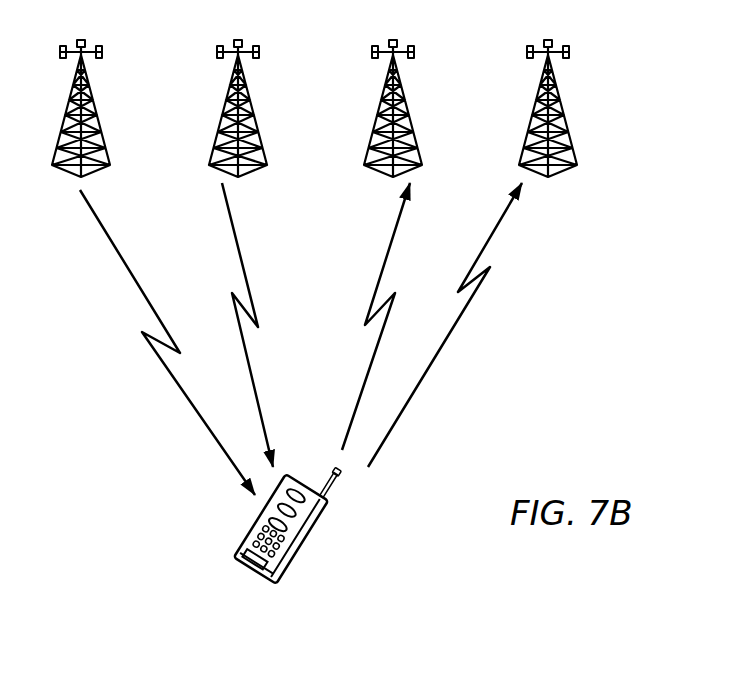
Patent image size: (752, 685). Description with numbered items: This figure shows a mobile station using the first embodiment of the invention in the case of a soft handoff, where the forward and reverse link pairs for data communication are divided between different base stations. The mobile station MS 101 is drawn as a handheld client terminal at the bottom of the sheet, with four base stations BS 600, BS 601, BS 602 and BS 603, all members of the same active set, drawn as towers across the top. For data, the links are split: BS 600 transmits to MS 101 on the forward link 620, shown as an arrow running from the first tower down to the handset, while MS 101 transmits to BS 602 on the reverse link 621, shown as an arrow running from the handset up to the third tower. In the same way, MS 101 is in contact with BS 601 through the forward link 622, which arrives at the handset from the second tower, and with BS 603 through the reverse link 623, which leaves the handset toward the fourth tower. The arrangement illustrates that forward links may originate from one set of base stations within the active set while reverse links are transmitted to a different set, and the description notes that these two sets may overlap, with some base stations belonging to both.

The base station BS 600 is at (92, 100).
The base station BS 601 is at (250, 100).
The base station BS 602 is at (405, 103).
The base station BS 603 is at (562, 103).
The forward link 620 is at (105, 233).
The reverse link 621 is at (383, 263).
The forward link 622 is at (238, 253).
The reverse link 623 is at (492, 242).
The mobile station MS 101 is at (297, 558).